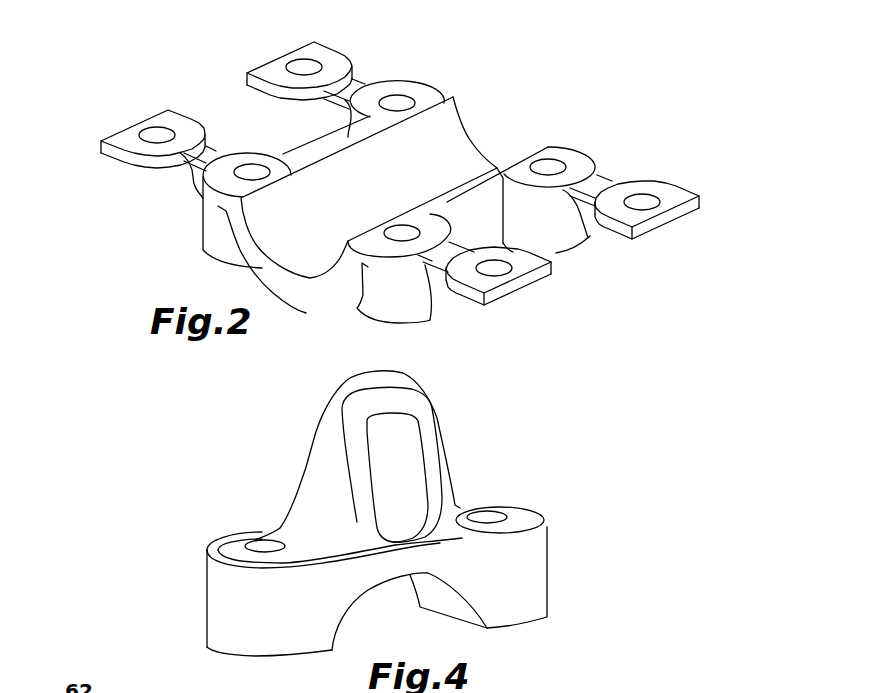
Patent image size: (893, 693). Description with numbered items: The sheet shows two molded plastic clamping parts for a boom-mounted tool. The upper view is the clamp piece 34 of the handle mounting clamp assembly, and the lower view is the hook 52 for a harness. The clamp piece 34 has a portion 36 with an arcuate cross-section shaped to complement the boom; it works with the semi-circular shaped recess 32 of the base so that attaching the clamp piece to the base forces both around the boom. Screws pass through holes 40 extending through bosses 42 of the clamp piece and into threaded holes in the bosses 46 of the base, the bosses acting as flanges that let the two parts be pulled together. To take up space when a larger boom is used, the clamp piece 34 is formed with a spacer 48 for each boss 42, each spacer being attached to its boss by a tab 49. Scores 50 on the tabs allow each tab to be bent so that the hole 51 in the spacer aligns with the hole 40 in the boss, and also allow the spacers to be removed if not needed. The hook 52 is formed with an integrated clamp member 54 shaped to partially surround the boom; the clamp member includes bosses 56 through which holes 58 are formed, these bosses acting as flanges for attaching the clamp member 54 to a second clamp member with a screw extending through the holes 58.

In FIG. 2, the semi-circular shaped recess 32 is at (497, 0).
In FIG. 2, the clamp piece 34 is at (284, 313).
In FIG. 2, the portion 36 is at (330, 220).
In FIG. 2, the holes 40 is at (252, 170).
In FIG. 2, the bosses 42 is at (217, 250).
In FIG. 2, the bosses 46 is at (360, 0).
In FIG. 2, the spacer 48 is at (113, 158).
In FIG. 2, the tab 49 is at (218, 145).
In FIG. 2, the scores 50 is at (190, 170).
In FIG. 2, the hole 51 is at (302, 63).
In FIG. 4, the hook 52 is at (438, 410).
In FIG. 4, the clamp member 54 is at (332, 602).
In FIG. 4, the bosses 56 is at (548, 562).
In FIG. 4, the holes 58 is at (266, 541).